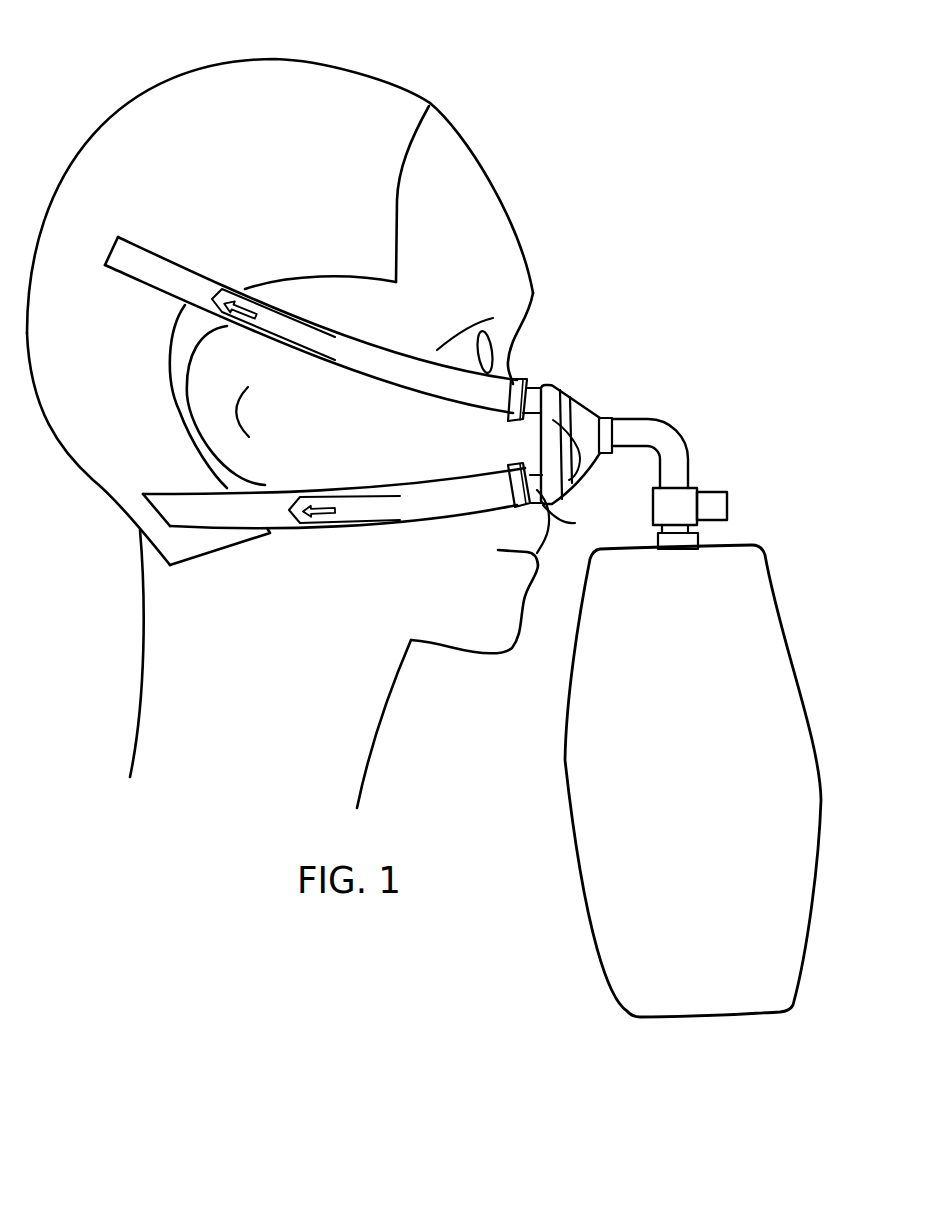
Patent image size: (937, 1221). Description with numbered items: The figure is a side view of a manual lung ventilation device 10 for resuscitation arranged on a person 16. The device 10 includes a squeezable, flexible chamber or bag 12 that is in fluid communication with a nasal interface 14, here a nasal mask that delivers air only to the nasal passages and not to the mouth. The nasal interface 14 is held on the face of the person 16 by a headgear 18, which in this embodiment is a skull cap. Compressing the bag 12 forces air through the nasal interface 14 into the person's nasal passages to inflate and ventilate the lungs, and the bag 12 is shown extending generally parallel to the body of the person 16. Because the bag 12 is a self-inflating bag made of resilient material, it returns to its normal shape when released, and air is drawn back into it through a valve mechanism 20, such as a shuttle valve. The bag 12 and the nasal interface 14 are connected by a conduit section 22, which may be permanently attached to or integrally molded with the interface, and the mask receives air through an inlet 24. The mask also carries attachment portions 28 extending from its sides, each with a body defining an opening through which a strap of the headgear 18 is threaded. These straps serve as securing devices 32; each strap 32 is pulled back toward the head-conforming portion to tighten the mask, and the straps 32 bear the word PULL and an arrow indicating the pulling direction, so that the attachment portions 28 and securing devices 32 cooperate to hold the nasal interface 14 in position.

The ventilation device 10 is at (653, 91).
The flexible chamber 12 is at (750, 608).
The nasal interface 14 is at (592, 407).
The person 16 is at (170, 612).
The headgear 18 is at (163, 112).
The valve mechanism 20 is at (717, 505).
The conduit section 22 is at (672, 443).
The inlet 24 is at (615, 408).
The attachment portion 28 is at (540, 384).
The securing device 32 is at (355, 362).